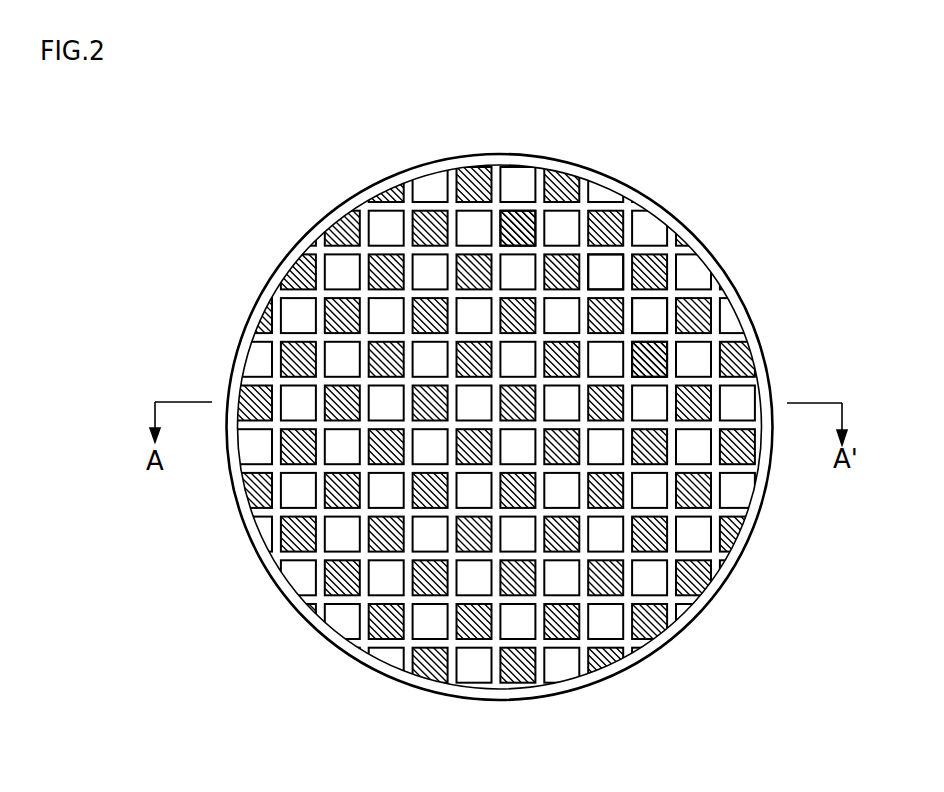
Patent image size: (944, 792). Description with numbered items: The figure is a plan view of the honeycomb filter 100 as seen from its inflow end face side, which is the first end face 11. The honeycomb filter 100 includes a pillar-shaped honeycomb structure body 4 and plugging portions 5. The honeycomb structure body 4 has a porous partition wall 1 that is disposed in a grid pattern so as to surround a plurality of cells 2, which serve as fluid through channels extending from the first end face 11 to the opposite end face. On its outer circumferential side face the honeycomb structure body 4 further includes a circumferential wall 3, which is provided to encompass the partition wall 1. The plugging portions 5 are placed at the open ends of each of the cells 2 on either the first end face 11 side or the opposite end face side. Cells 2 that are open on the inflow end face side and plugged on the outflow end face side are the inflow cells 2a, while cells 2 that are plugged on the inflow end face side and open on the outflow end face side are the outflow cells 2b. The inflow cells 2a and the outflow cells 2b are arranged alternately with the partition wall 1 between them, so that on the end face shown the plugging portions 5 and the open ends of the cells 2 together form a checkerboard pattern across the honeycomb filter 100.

The honeycomb filter 100 is at (827, 125).
The first end face 11 is at (307, 212).
The partition wall 1 is at (612, 253).
The cells 2 is at (741, 294).
The inflow cells 2a is at (648, 317).
The outflow cells 2b is at (643, 363).
The circumferential wall 3 is at (715, 590).
The honeycomb structure body 4 is at (773, 365).
The plugging portions 5 is at (515, 235).